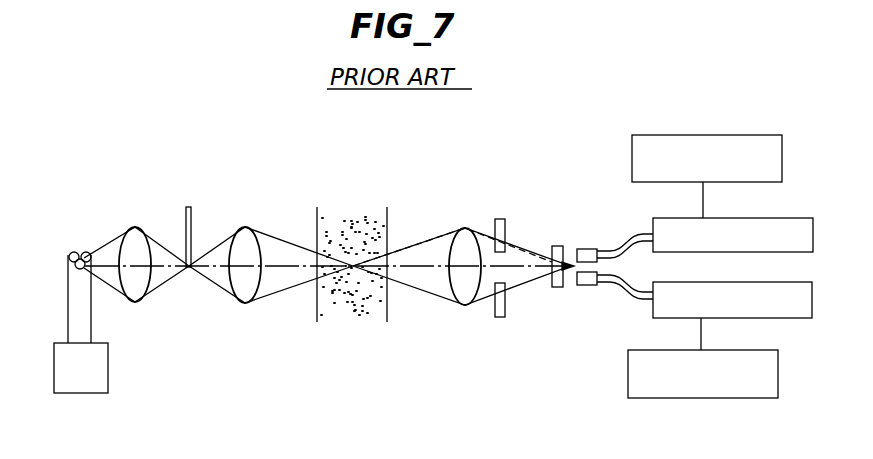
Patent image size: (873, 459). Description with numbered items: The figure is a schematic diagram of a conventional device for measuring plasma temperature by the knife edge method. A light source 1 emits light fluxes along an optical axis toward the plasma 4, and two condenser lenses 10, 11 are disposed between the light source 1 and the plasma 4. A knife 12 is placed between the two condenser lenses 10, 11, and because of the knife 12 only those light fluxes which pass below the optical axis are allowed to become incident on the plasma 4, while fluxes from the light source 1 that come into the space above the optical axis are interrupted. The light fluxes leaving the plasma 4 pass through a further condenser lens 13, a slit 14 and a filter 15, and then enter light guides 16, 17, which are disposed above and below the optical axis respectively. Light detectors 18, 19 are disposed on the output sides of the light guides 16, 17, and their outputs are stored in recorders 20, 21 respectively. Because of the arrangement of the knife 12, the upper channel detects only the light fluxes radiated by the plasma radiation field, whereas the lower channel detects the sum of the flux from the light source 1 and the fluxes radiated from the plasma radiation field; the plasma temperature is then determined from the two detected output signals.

The light source 1 is at (78, 255).
The condenser lens 10 is at (135, 227).
The knife 12 is at (191, 207).
The condenser lens 11 is at (246, 227).
The plasma 4 is at (350, 215).
The condenser lens 13 is at (465, 305).
The slit 14 is at (497, 219).
The filter 15 is at (556, 246).
The light guide 16 is at (586, 249).
The light guide 17 is at (587, 285).
The light detector 18 is at (653, 218).
The light detector 19 is at (653, 318).
The recorder 20 is at (660, 135).
The recorder 21 is at (628, 376).